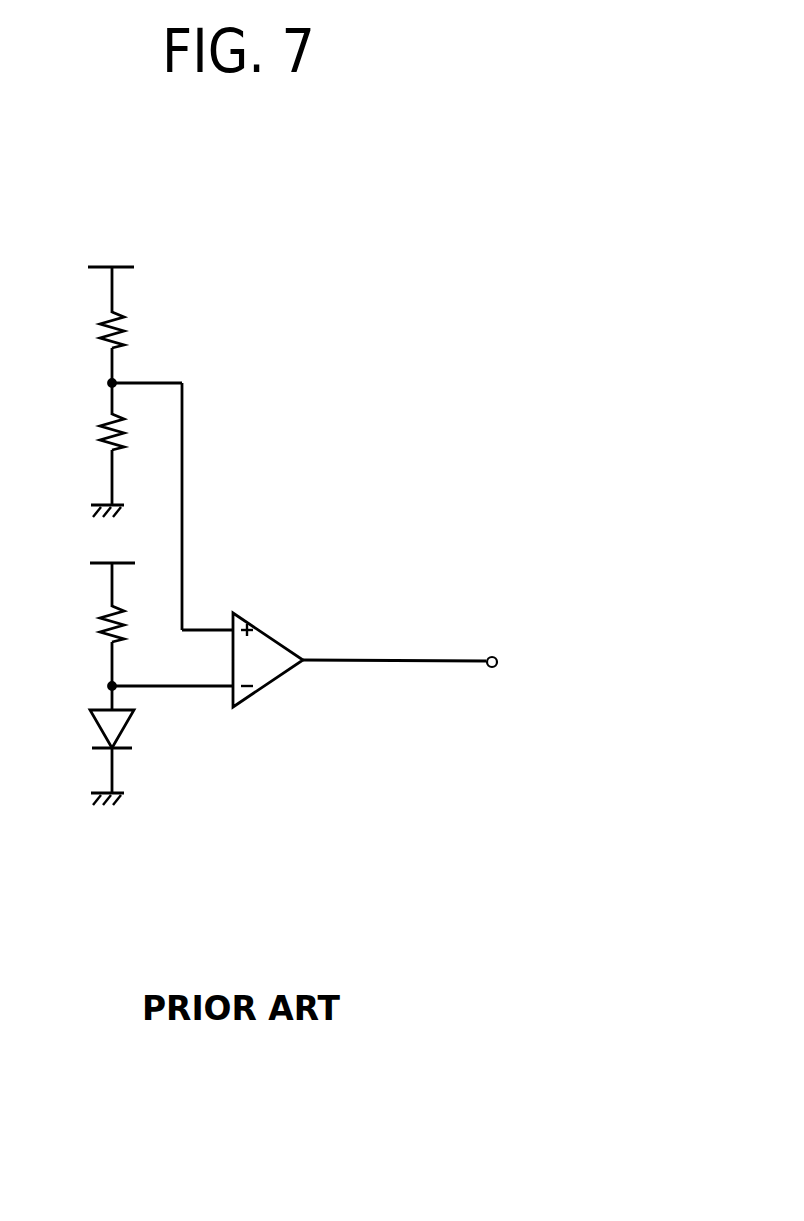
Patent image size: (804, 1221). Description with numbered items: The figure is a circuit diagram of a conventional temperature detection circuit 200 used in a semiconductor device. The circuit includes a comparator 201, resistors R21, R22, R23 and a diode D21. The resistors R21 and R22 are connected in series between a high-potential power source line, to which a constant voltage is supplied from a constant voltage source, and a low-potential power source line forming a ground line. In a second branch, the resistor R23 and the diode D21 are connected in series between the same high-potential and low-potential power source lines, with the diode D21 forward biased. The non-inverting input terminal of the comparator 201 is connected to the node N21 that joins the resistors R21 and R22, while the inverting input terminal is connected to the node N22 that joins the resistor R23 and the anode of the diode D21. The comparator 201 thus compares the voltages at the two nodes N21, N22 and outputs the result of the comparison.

The temperature detection circuit 200 is at (463, 254).
The comparator 201 is at (270, 633).
The resistor R21 is at (83, 330).
The resistor R22 is at (83, 432).
The resistor R23 is at (83, 624).
The diode D21 is at (83, 729).
The node N21 is at (106, 383).
The node N22 is at (106, 686).